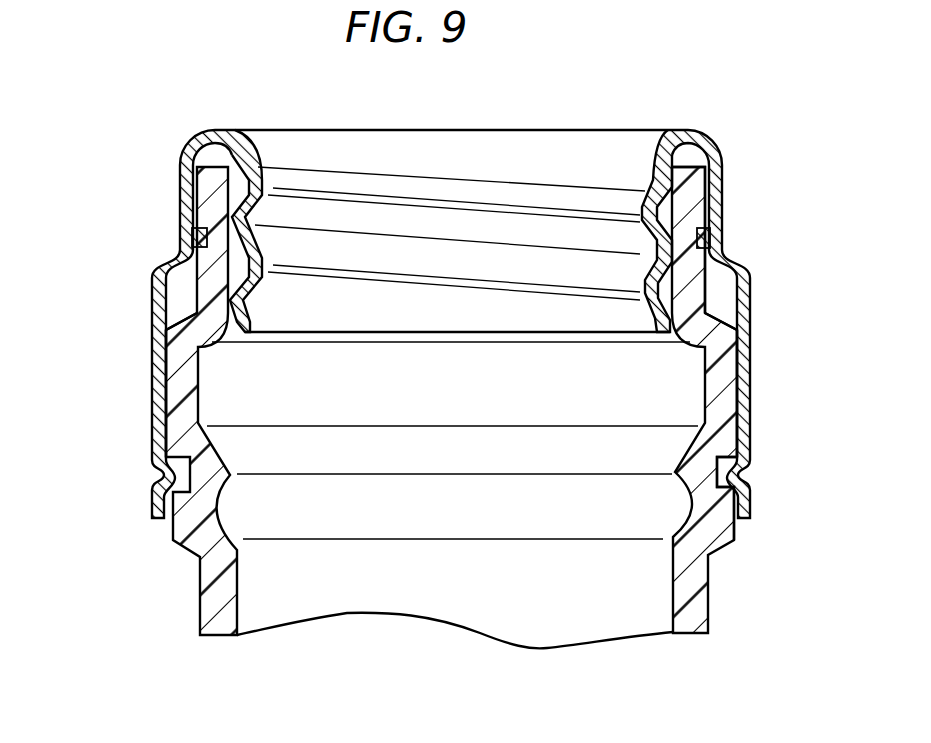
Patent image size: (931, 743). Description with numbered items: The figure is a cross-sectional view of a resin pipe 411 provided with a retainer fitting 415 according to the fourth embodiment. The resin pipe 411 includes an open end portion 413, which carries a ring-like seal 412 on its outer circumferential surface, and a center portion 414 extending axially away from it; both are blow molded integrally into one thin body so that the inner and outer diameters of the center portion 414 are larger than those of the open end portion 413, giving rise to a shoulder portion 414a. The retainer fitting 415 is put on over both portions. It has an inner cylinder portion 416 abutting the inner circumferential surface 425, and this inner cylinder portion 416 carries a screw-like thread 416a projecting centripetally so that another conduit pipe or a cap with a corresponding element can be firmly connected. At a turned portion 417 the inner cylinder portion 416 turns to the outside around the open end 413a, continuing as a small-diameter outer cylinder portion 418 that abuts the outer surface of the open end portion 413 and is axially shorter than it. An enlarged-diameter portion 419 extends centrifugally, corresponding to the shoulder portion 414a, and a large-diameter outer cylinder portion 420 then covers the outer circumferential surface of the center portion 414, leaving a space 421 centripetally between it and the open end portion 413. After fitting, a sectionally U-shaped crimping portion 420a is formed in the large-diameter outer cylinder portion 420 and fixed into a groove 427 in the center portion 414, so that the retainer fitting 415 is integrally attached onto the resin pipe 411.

The resin pipe 411 is at (716, 594).
The ring-like seal 412 is at (710, 232).
The open end portion 413 is at (697, 185).
The open end 413a is at (692, 160).
The center portion 414 is at (725, 383).
The shoulder portion 414a is at (178, 327).
The retainer fitting 415 is at (514, 131).
The inner cylinder portion 416 is at (273, 317).
The screw-like thread 416a is at (290, 176).
The turned portion 417 is at (210, 137).
The small-diameter outer cylinder portion 418 is at (185, 205).
The enlarged-diameter portion 419 is at (160, 268).
The large-diameter outer cylinder portion 420 is at (158, 443).
The crimping portion 420a is at (736, 478).
The space 421 is at (738, 282).
The inner circumferential surface 425 is at (470, 396).
The groove 427 is at (728, 485).